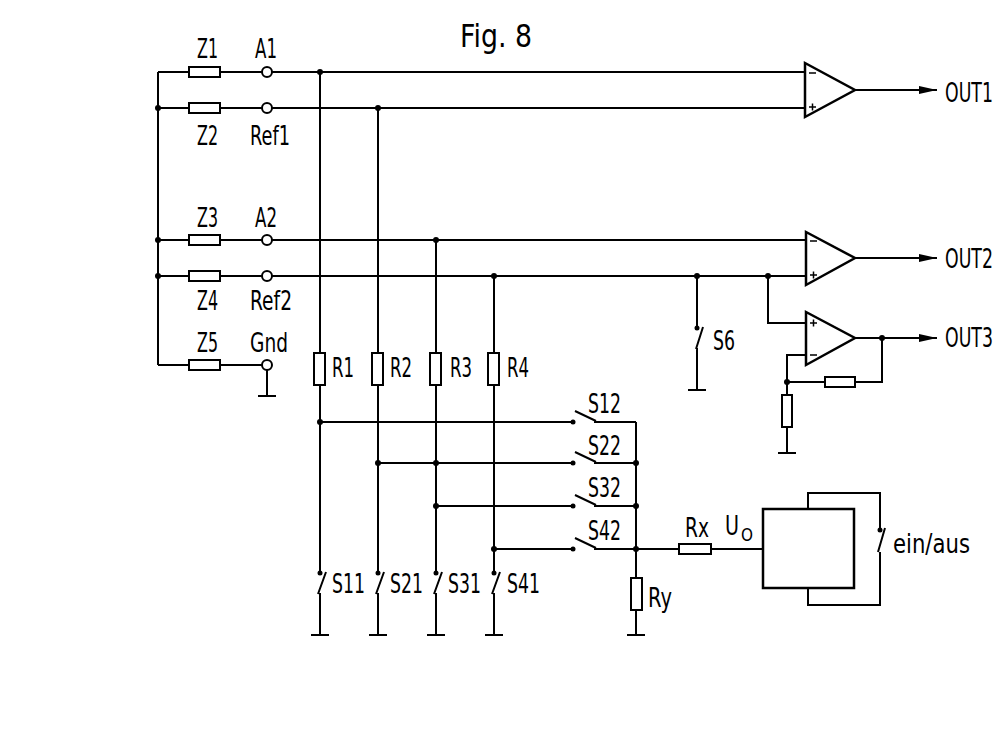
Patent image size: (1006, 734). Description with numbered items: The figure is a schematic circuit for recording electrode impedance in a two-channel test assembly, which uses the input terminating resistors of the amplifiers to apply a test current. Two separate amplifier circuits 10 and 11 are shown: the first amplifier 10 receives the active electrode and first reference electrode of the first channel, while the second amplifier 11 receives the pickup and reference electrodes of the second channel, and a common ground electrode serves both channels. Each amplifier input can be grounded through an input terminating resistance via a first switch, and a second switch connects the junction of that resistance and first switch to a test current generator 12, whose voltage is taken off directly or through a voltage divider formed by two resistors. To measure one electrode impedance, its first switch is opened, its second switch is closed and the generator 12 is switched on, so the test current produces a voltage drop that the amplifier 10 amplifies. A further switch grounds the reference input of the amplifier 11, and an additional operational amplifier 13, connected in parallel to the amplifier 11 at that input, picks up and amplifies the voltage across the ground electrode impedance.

The amplifier 10 is at (837, 103).
The amplifier 11 is at (837, 243).
The test current generator 12 is at (820, 562).
The additional operational amplifier 13 is at (837, 318).